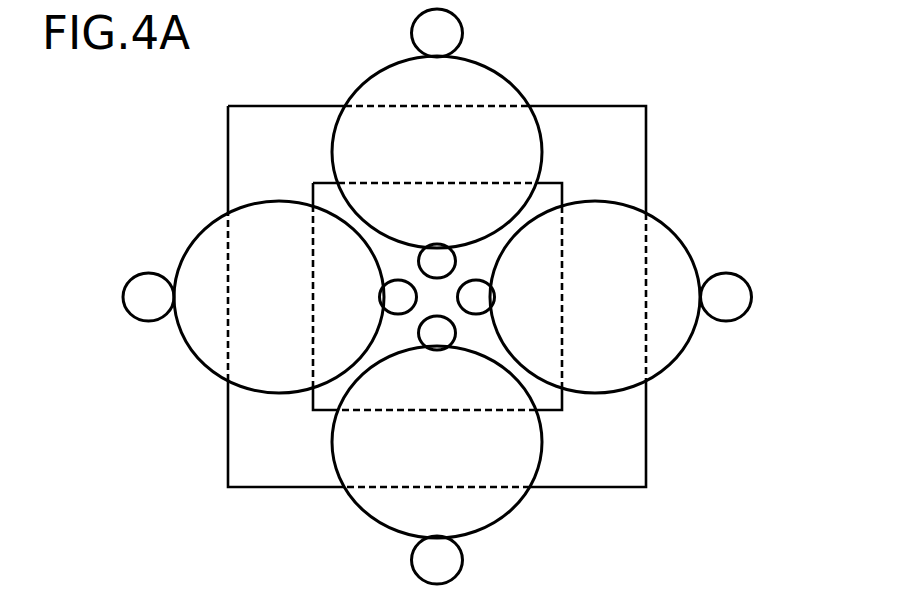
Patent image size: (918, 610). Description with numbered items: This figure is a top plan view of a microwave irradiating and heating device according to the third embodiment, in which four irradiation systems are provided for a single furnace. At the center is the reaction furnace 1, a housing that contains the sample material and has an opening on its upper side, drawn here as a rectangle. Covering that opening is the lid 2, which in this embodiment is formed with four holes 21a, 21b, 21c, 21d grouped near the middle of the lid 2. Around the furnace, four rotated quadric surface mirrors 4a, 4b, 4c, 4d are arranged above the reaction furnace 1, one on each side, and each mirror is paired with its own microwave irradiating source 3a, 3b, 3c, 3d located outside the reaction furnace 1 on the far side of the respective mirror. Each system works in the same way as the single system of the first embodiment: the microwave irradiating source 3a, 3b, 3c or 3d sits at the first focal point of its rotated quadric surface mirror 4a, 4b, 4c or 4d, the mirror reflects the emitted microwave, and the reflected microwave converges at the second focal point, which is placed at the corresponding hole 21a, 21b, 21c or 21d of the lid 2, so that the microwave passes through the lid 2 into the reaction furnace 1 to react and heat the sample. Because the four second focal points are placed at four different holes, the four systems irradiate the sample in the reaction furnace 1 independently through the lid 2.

The reaction furnace 1 is at (250, 440).
The lid 2 is at (337, 190).
The microwave irradiating source 3a is at (748, 282).
The microwave irradiating source 3b is at (143, 273).
The microwave irradiating source 3c is at (461, 23).
The microwave irradiating source 3d is at (463, 562).
The rotated quadric surface mirror 4a is at (678, 232).
The rotated quadric surface mirror 4b is at (210, 222).
The rotated quadric surface mirror 4c is at (502, 72).
The rotated quadric surface mirror 4d is at (508, 515).
The hole 21a is at (478, 305).
The hole 21b is at (398, 288).
The hole 21c is at (447, 258).
The hole 21d is at (427, 335).